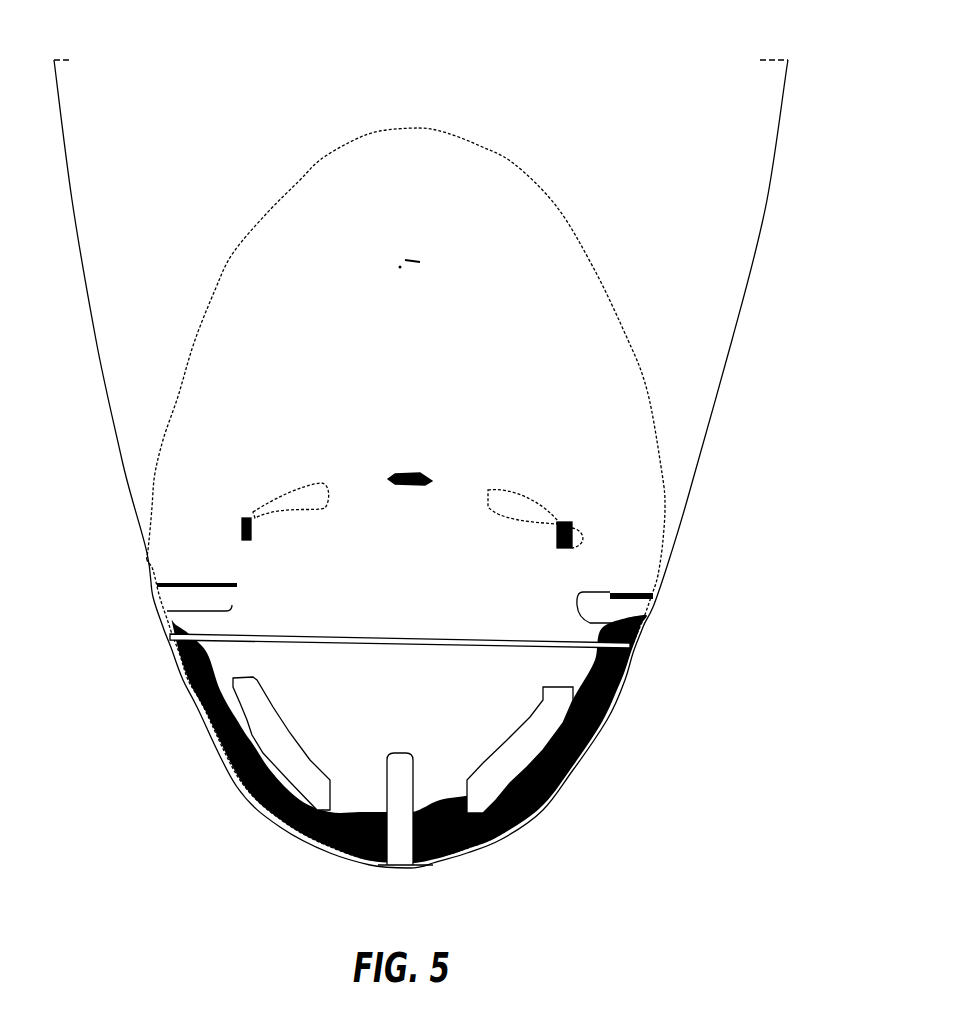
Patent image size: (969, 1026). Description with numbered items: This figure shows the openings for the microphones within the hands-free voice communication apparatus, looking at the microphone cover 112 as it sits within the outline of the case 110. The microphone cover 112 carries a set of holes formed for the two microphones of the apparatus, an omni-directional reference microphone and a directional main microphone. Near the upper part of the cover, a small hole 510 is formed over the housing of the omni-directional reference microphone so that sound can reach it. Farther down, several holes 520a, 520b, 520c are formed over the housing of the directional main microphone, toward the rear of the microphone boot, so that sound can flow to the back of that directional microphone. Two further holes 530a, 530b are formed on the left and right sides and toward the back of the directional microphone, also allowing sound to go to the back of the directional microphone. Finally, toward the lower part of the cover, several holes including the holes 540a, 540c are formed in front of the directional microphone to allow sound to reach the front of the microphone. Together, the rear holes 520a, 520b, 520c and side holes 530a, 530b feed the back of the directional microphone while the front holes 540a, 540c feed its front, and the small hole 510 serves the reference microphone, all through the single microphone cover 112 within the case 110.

The case 110 is at (773, 145).
The microphone cover 112 is at (432, 128).
The small hole 510 is at (425, 265).
The hole 520a is at (250, 515).
The hole 520b is at (383, 477).
The hole 520c is at (568, 522).
The hole 530a is at (175, 597).
The hole 530b is at (627, 610).
The hole 540a is at (270, 727).
The hole 540c is at (533, 741).